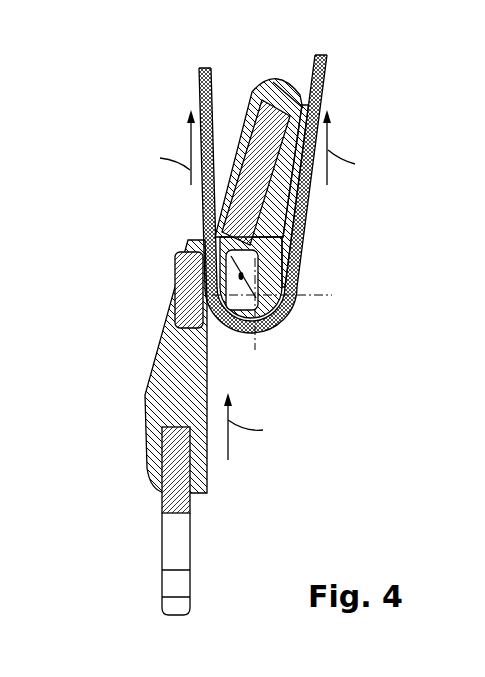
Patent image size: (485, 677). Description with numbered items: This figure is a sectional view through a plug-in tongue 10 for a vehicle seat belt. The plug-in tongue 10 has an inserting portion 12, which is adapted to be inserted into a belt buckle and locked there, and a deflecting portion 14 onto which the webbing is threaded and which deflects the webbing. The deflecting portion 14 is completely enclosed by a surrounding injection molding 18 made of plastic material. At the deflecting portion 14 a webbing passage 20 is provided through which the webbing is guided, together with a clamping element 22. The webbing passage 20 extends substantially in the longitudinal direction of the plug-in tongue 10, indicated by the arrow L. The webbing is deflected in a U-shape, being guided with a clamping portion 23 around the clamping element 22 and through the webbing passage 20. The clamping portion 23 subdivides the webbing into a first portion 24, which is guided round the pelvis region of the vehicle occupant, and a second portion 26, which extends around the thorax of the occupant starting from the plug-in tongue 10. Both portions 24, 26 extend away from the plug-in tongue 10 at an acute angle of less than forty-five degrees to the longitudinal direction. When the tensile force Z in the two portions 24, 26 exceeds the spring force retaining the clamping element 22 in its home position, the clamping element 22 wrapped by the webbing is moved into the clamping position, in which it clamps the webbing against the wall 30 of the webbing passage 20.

The plug-in tongue 10 is at (213, 322).
The inserting portion 12 is at (168, 548).
The deflecting portion 14 is at (282, 137).
The surrounding injection molding 18 is at (282, 208).
The webbing passage 20 is at (186, 247).
The clamping element 22 is at (268, 308).
The clamping portion 23 is at (234, 331).
The first portion 24 is at (200, 92).
The second portion 26 is at (328, 78).
The wall 30 is at (287, 250).